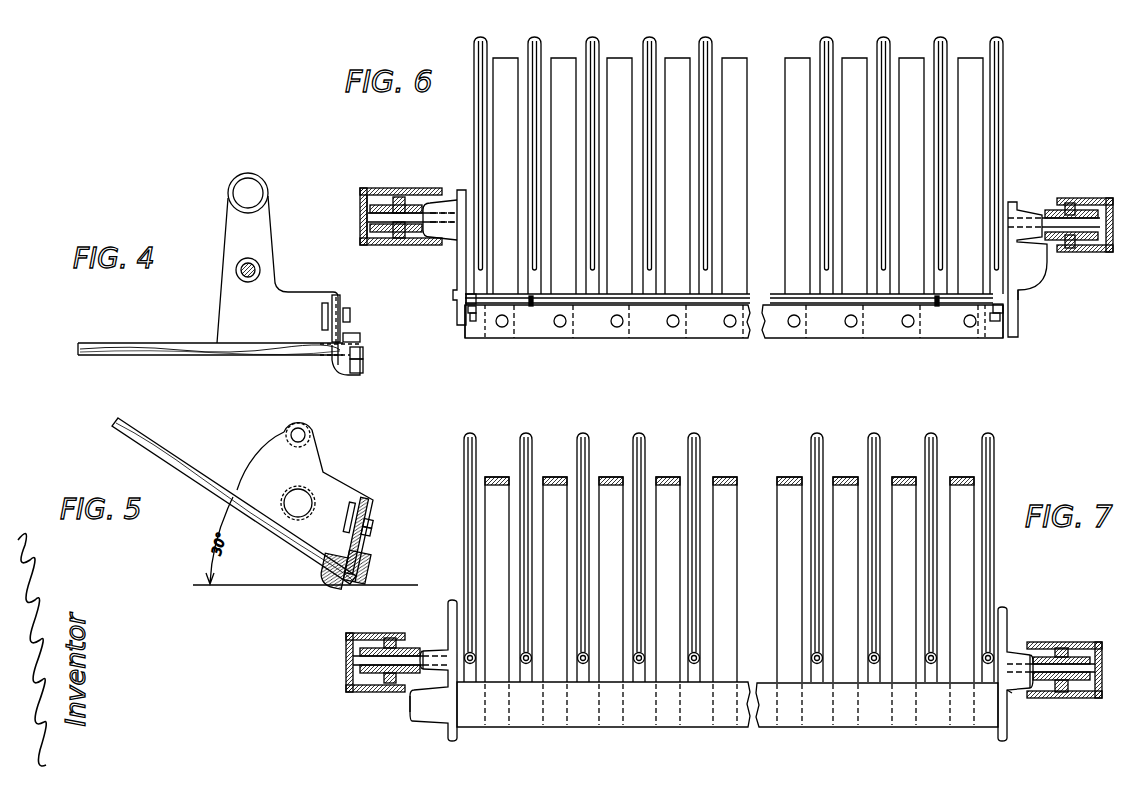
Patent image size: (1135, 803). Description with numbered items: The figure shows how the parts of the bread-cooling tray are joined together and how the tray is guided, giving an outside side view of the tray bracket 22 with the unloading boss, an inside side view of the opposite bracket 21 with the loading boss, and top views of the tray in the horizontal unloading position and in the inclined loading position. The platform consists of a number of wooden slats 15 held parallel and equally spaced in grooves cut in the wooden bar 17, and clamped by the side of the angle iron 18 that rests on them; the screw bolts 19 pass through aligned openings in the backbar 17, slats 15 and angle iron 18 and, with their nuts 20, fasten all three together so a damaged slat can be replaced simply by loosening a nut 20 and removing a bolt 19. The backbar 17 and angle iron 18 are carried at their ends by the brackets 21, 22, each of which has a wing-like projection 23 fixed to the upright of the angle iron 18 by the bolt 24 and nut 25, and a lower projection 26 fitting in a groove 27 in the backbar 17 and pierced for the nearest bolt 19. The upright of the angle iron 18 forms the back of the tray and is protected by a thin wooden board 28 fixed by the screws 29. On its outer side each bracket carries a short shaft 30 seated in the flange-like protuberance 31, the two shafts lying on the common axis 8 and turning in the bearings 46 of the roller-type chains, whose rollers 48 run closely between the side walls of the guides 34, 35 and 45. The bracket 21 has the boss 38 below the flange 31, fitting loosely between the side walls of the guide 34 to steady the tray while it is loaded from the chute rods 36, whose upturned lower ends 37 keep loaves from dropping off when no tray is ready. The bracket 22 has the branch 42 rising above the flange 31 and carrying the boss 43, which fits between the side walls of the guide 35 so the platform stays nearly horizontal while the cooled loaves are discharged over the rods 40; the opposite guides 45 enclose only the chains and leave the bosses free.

In FIG. 6, the axis 8 is at (366, 218).
In FIG. 6, the wooden slat 15 is at (624, 60).
In FIG. 7, the wooden slat 15 is at (556, 477).
In FIG. 4, the wooden slat 15 is at (142, 343).
In FIG. 5, the wooden slat 15 is at (177, 452).
In FIG. 6, the wooden bar 17 is at (752, 338).
In FIG. 7, the wooden bar 17 is at (630, 712).
In FIG. 4, the wooden bar 17 is at (363, 366).
In FIG. 6, the angle iron 18 is at (745, 330).
In FIG. 4, the angle iron 18 is at (360, 338).
In FIG. 5, the angle iron 18 is at (365, 558).
In FIG. 6, the screw bolt 19 is at (503, 328).
In FIG. 4, the screw bolt 19 is at (363, 352).
In FIG. 4, the nut 20 is at (350, 327).
In FIG. 6, the bracket 21 is at (1018, 305).
In FIG. 7, the bracket 21 is at (1006, 727).
In FIG. 6, the bracket 22 is at (457, 252).
In FIG. 7, the bracket 22 is at (448, 612).
In FIG. 6, the wing-like projection 23 is at (468, 310).
In FIG. 4, the wing-like projection 23 is at (340, 305).
In FIG. 5, the wing-like projection 23 is at (372, 512).
In FIG. 6, the bolt 24 is at (466, 296).
In FIG. 5, the bolt 24 is at (376, 520).
In FIG. 6, the nut 25 is at (468, 320).
In FIG. 5, the nut 25 is at (372, 528).
In FIG. 6, the projection 26 is at (485, 330).
In FIG. 4, the projection 26 is at (338, 377).
In FIG. 4, the groove 27 is at (332, 360).
In FIG. 5, the groove 27 is at (324, 560).
In FIG. 6, the thin wooden board 28 is at (772, 294).
In FIG. 4, the thin wooden board 28 is at (322, 316).
In FIG. 5, the thin wooden board 28 is at (340, 512).
In FIG. 6, the screw 29 is at (531, 308).
In FIG. 6, the shaft 30 is at (362, 206).
In FIG. 7, the shaft 30 is at (346, 665).
In FIG. 4, the shaft 30 is at (260, 268).
In FIG. 5, the shaft 30 is at (308, 432).
In FIG. 6, the flange-like protuberance 31 is at (448, 207).
In FIG. 7, the flange-like protuberance 31 is at (437, 650).
In FIG. 4, the flange-like protuberance 31 is at (237, 270).
In FIG. 5, the flange-like protuberance 31 is at (287, 432).
In FIG. 7, the guide 34 is at (1088, 638).
In FIG. 6, the guide 35 is at (392, 192).
In FIG. 7, the rod 36 is at (694, 450).
In FIG. 7, the lower end 37 is at (700, 659).
In FIG. 6, the boss 38 is at (1047, 262).
In FIG. 7, the boss 38 is at (1010, 694).
In FIG. 5, the boss 38 is at (292, 508).
In FIG. 6, the rod 40 is at (702, 55).
In FIG. 4, the branch 42 is at (275, 238).
In FIG. 6, the boss 43 is at (442, 200).
In FIG. 7, the boss 43 is at (414, 700).
In FIG. 4, the boss 43 is at (258, 190).
In FIG. 6, the guide 45 is at (1095, 198).
In FIG. 7, the guide 45 is at (352, 694).
In FIG. 6, the bearing 46 is at (382, 238).
In FIG. 7, the bearing 46 is at (378, 674).
In FIG. 6, the roller 48 is at (400, 197).
In FIG. 7, the roller 48 is at (392, 638).